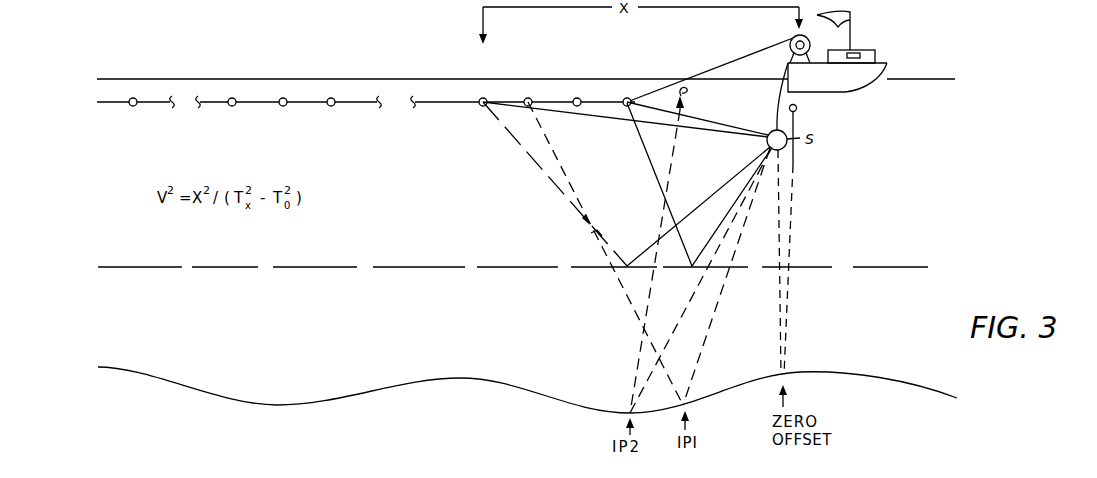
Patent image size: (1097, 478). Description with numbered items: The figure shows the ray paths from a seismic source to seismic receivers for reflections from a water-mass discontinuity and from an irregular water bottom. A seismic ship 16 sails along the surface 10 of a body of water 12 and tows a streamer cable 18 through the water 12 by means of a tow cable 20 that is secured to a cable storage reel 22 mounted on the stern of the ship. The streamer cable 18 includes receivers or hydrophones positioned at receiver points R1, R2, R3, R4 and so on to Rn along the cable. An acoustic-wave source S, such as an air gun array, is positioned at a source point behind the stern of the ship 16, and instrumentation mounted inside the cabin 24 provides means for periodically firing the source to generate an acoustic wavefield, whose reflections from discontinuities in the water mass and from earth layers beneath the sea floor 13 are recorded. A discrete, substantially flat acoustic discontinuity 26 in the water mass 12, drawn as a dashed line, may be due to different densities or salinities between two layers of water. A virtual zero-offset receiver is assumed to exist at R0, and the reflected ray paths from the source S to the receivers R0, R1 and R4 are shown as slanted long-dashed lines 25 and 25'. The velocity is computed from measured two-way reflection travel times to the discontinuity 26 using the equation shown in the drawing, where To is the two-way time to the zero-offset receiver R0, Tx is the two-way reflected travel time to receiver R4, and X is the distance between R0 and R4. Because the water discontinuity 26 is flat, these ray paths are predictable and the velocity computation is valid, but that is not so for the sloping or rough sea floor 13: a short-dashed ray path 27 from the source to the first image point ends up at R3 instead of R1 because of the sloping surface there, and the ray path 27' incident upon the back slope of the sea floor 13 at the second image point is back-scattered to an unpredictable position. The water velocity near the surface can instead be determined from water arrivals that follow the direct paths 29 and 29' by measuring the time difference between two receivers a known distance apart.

The surface 10 is at (928, 76).
The body of water 12 is at (891, 171).
The sea floor 13 is at (855, 376).
The seismic ship 16 is at (887, 68).
The streamer cable 18 is at (366, 83).
The tow cable 20 is at (727, 63).
The cable storage reel 22 is at (790, 38).
The cabin 24 is at (862, 56).
The reflected ray path 25 is at (626, 184).
The reflected ray path 25' is at (689, 184).
The water discontinuity 26 is at (862, 266).
The ray path 27 is at (605, 253).
The ray path 27' is at (665, 250).
The direct path 29 is at (625, 119).
The direct path 29' is at (697, 118).
The receiver point Rn is at (129, 95).
The receiver point R4 is at (483, 94).
The receiver point R3 is at (528, 94).
The receiver point R2 is at (577, 94).
The receiver point R1 is at (627, 94).
The virtual zero-offset receiver R0 is at (803, 113).